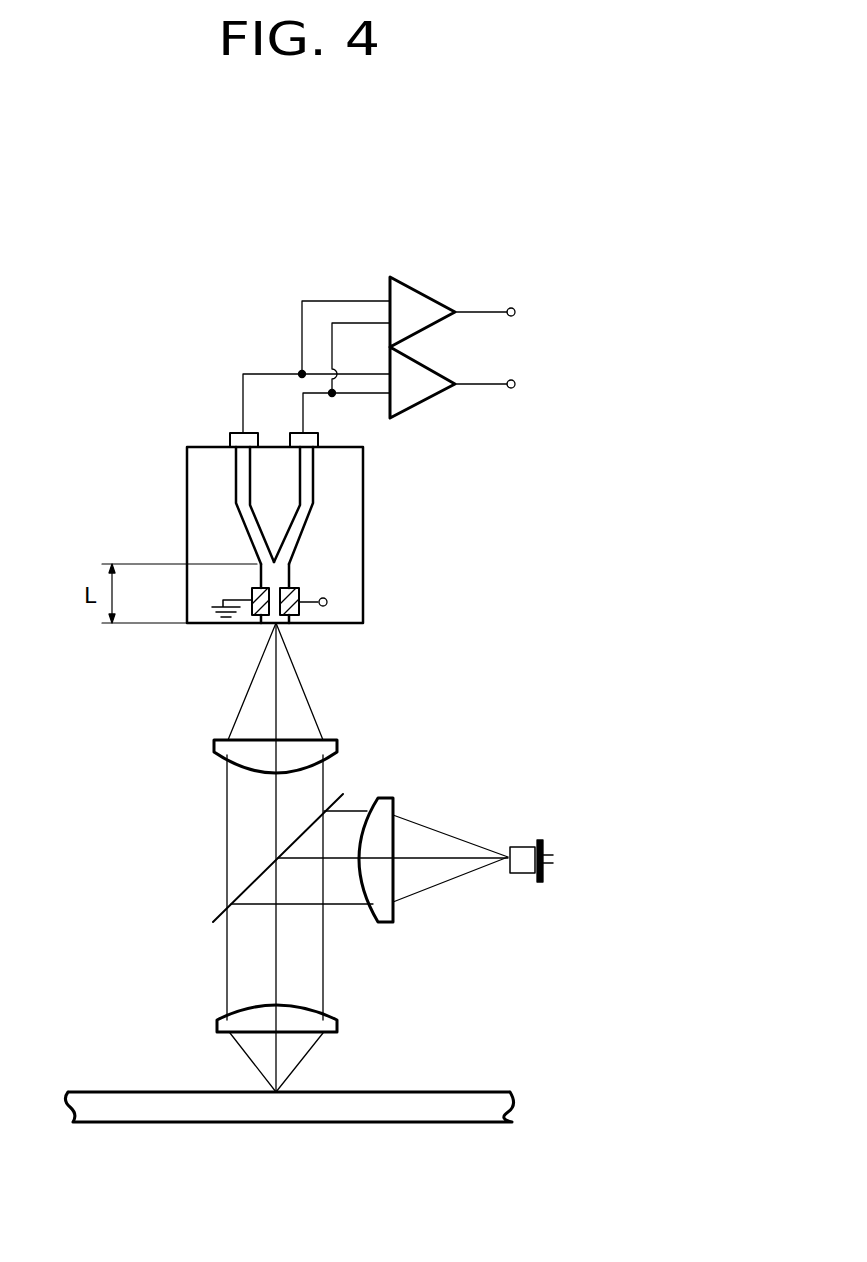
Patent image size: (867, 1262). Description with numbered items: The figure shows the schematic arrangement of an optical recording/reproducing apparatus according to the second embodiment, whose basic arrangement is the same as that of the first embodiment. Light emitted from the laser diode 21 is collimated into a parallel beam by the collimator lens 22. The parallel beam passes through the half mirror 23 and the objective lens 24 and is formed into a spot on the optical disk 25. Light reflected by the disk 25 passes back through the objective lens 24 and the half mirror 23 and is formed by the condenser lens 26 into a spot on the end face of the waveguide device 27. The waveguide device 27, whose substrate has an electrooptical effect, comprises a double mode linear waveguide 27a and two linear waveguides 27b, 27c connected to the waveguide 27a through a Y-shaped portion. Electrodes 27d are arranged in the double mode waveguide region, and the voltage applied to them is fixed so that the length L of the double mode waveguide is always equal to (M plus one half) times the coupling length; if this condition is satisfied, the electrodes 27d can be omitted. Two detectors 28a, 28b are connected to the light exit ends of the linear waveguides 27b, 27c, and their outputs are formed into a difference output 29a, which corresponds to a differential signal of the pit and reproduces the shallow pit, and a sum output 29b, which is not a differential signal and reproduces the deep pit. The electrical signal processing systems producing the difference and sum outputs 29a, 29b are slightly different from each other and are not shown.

The laser diode 21 is at (525, 845).
The collimator lens 22 is at (390, 797).
The half mirror 23 is at (217, 908).
The objective lens 24 is at (217, 1020).
The optical disk 25 is at (448, 1090).
The condenser lens 26 is at (218, 752).
The waveguide device 27 is at (363, 542).
The double mode linear waveguide 27a is at (280, 574).
The linear waveguide 27b is at (238, 486).
The linear waveguide 27c is at (307, 487).
The electrodes 27d is at (270, 614).
The detector 28a is at (230, 433).
The detector 28b is at (318, 436).
The difference output 29a is at (505, 381).
The sum output 29b is at (505, 309).